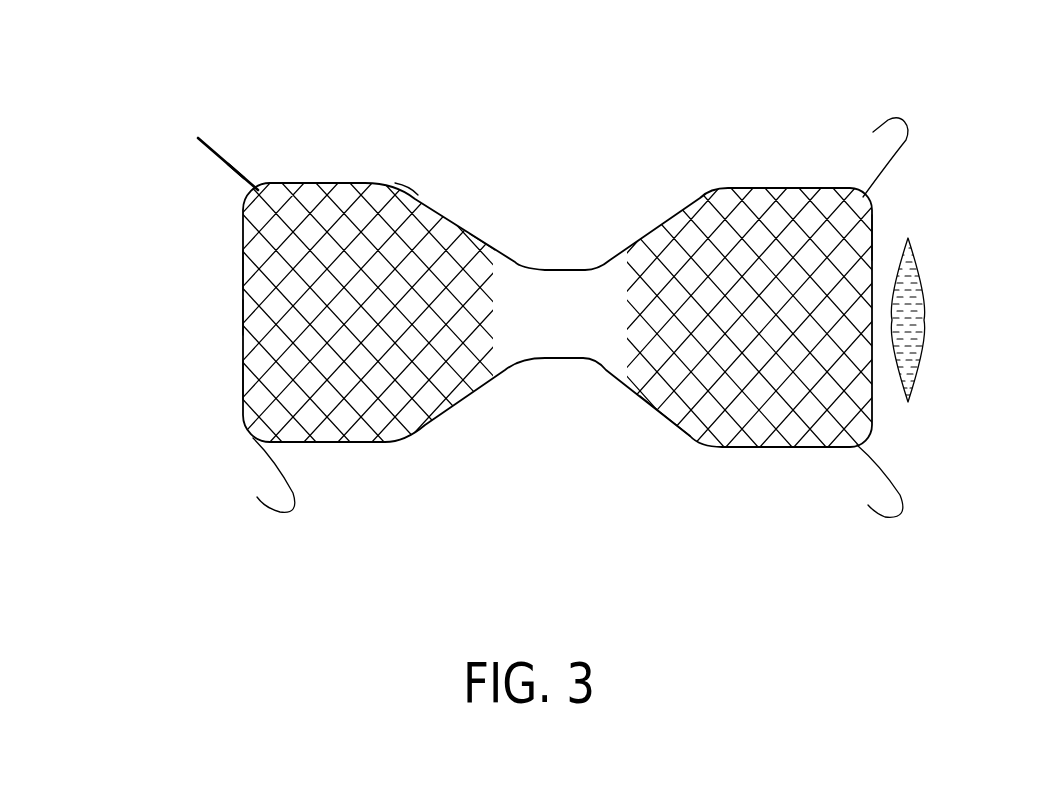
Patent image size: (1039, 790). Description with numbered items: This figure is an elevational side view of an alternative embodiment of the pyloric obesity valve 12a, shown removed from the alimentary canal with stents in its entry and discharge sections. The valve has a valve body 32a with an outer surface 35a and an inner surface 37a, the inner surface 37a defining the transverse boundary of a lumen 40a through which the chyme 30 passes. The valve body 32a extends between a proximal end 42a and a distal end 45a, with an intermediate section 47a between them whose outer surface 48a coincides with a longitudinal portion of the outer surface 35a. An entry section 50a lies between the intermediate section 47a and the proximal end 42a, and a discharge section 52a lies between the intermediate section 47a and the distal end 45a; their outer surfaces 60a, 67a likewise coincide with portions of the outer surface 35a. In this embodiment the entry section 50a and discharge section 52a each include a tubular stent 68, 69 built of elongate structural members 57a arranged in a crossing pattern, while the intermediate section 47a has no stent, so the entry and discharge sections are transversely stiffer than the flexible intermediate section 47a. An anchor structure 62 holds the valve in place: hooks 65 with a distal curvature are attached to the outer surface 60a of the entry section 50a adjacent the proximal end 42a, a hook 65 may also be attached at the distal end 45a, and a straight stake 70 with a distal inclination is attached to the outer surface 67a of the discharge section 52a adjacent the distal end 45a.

The pyloric obesity valve 12a is at (668, 204).
The chyme 30 is at (917, 337).
The valve body 32a is at (483, 228).
The outer surface 35a is at (708, 393).
The inner surface 37a is at (243, 316).
The lumen 40a is at (243, 380).
The proximal end 42a is at (872, 228).
The distal end 45a is at (243, 270).
The intermediate section 47a is at (578, 308).
The outer surface of intermediate section 48a is at (592, 366).
The entry section 50a is at (778, 224).
The discharge section 52a is at (423, 194).
The elongate structural members 57a is at (349, 204).
The outer surface of entry section 60a is at (810, 213).
The anchor structure 62 is at (231, 158).
The hooks 65 is at (295, 502).
The outer surface of discharge section 67a is at (370, 197).
The tubular stent 68 is at (789, 386).
The tubular stent 69 is at (397, 370).
The stake 70 is at (208, 145).